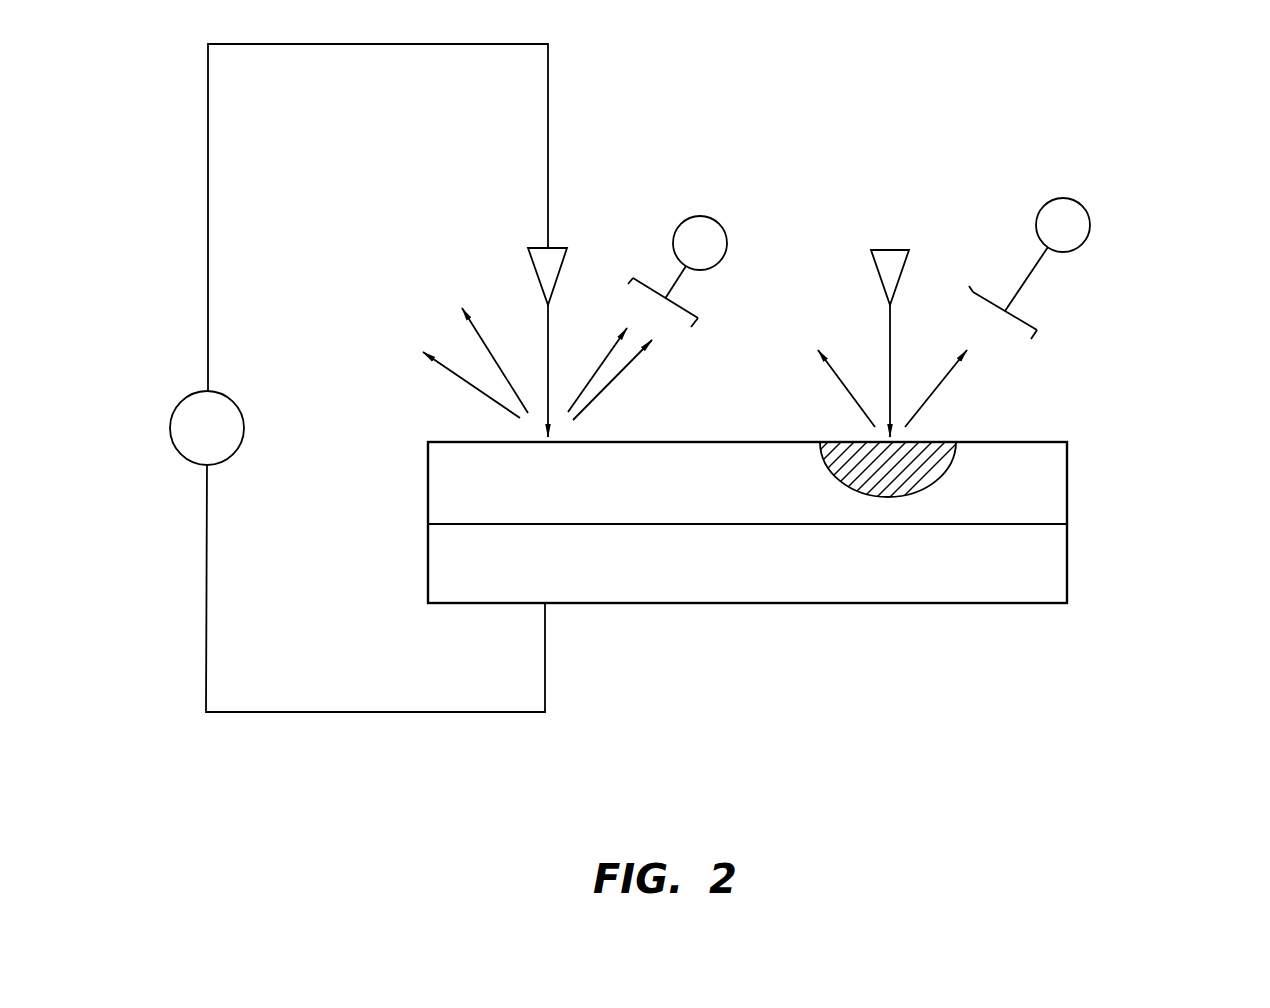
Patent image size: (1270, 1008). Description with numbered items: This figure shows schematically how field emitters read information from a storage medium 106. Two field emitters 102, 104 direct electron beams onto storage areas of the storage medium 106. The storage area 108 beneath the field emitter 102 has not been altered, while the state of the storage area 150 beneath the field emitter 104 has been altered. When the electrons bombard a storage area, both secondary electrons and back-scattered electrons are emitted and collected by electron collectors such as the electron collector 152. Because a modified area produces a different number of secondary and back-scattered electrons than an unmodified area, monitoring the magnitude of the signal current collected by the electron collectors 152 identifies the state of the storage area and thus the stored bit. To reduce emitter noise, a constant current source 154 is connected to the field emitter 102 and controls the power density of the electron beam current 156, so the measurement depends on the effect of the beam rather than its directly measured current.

The field emitter 102 is at (553, 258).
The field emitter 104 is at (892, 263).
The storage medium 106 is at (1152, 520).
The storage area 108 is at (585, 433).
The storage area 150 is at (938, 430).
The electron collector 152 is at (1090, 207).
The constant current source 154 is at (253, 400).
The electron beam current 156 is at (535, 338).